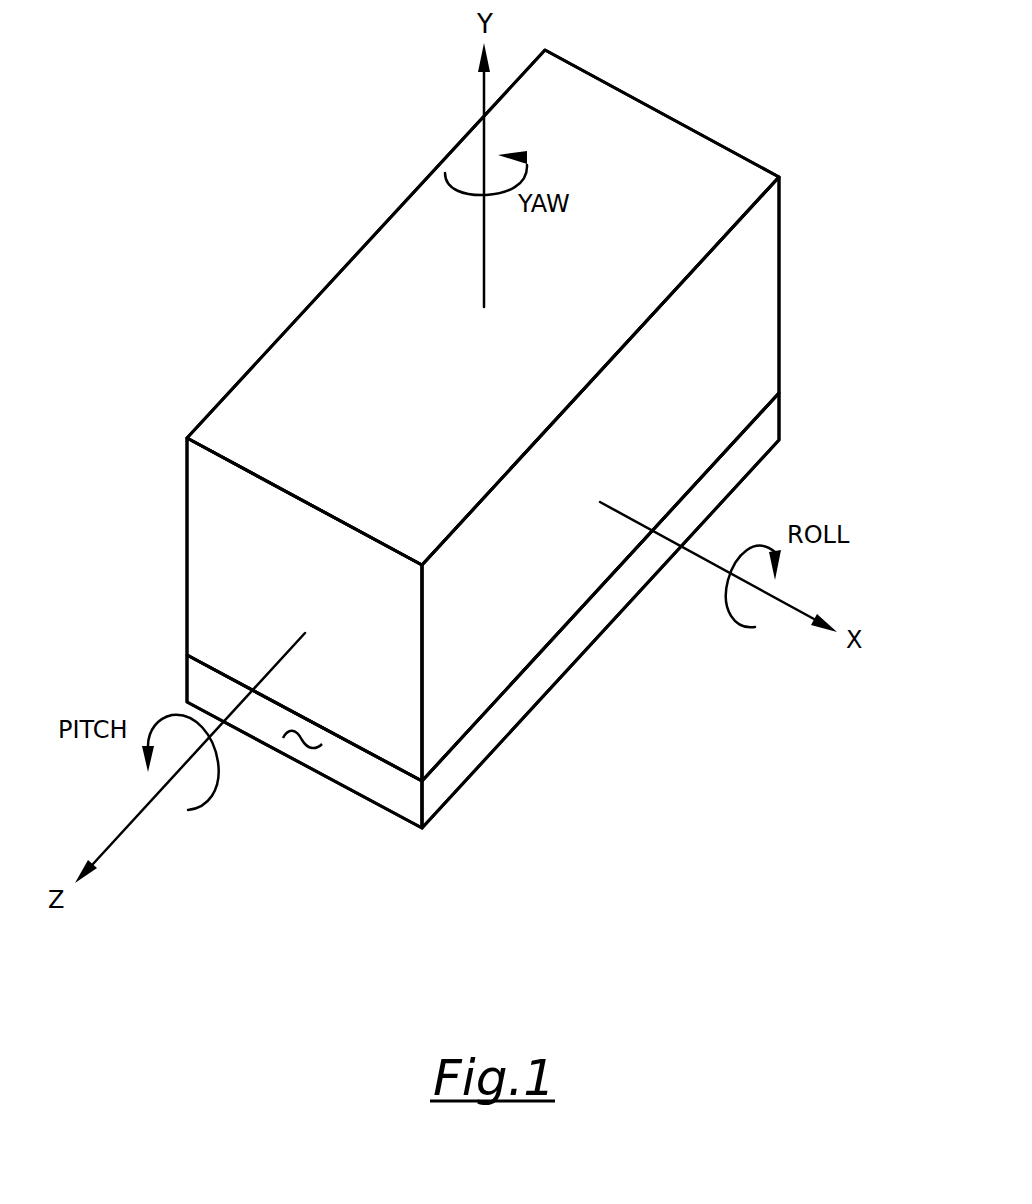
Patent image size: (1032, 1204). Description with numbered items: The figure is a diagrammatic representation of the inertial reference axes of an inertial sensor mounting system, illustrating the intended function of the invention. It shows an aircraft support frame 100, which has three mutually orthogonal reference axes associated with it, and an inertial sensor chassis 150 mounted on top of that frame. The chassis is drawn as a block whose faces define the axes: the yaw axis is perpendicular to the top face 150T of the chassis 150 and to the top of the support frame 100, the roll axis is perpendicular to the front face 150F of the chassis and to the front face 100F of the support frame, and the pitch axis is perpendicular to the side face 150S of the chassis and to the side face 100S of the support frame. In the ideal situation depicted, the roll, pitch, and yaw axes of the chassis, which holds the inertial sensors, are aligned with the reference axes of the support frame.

The aircraft support frame 100 is at (375, 808).
The side face of support frame 100S is at (290, 753).
The front face of support frame 100F is at (457, 768).
The inertial sensor chassis 150 is at (780, 243).
The top face of chassis 150T is at (367, 429).
The side face of chassis 150S is at (278, 569).
The front face of chassis 150F is at (541, 587).